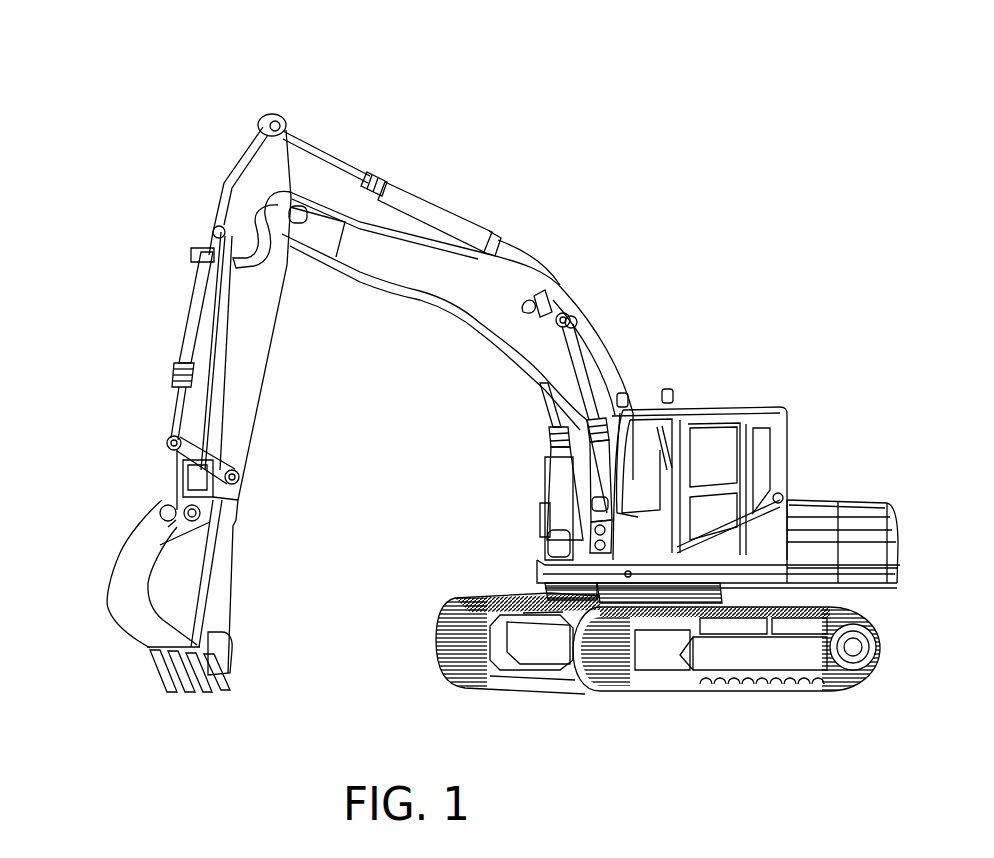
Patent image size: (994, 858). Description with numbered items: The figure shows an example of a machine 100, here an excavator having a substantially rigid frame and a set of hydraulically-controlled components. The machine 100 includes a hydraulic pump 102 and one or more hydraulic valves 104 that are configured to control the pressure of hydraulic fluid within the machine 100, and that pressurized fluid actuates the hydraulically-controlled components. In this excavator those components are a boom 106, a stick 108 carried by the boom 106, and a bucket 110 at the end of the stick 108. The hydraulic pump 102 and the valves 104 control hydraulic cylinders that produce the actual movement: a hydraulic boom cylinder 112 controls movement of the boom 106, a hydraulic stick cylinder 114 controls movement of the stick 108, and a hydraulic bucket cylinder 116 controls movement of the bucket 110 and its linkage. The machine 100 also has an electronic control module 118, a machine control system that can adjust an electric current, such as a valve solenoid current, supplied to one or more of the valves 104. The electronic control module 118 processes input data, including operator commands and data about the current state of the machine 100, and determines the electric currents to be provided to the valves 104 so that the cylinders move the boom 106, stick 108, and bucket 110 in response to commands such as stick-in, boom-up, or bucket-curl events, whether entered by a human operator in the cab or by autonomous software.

The machine 100 is at (196, 118).
The hydraulic pump 102 is at (850, 527).
The hydraulic valves 104 is at (820, 527).
The boom 106 is at (487, 303).
The stick 108 is at (244, 341).
The bucket 110 is at (177, 583).
The hydraulic boom cylinder 112 is at (592, 418).
The hydraulic stick cylinder 114 is at (388, 192).
The hydraulic bucket cylinder 116 is at (175, 390).
The electronic control module 118 is at (813, 557).